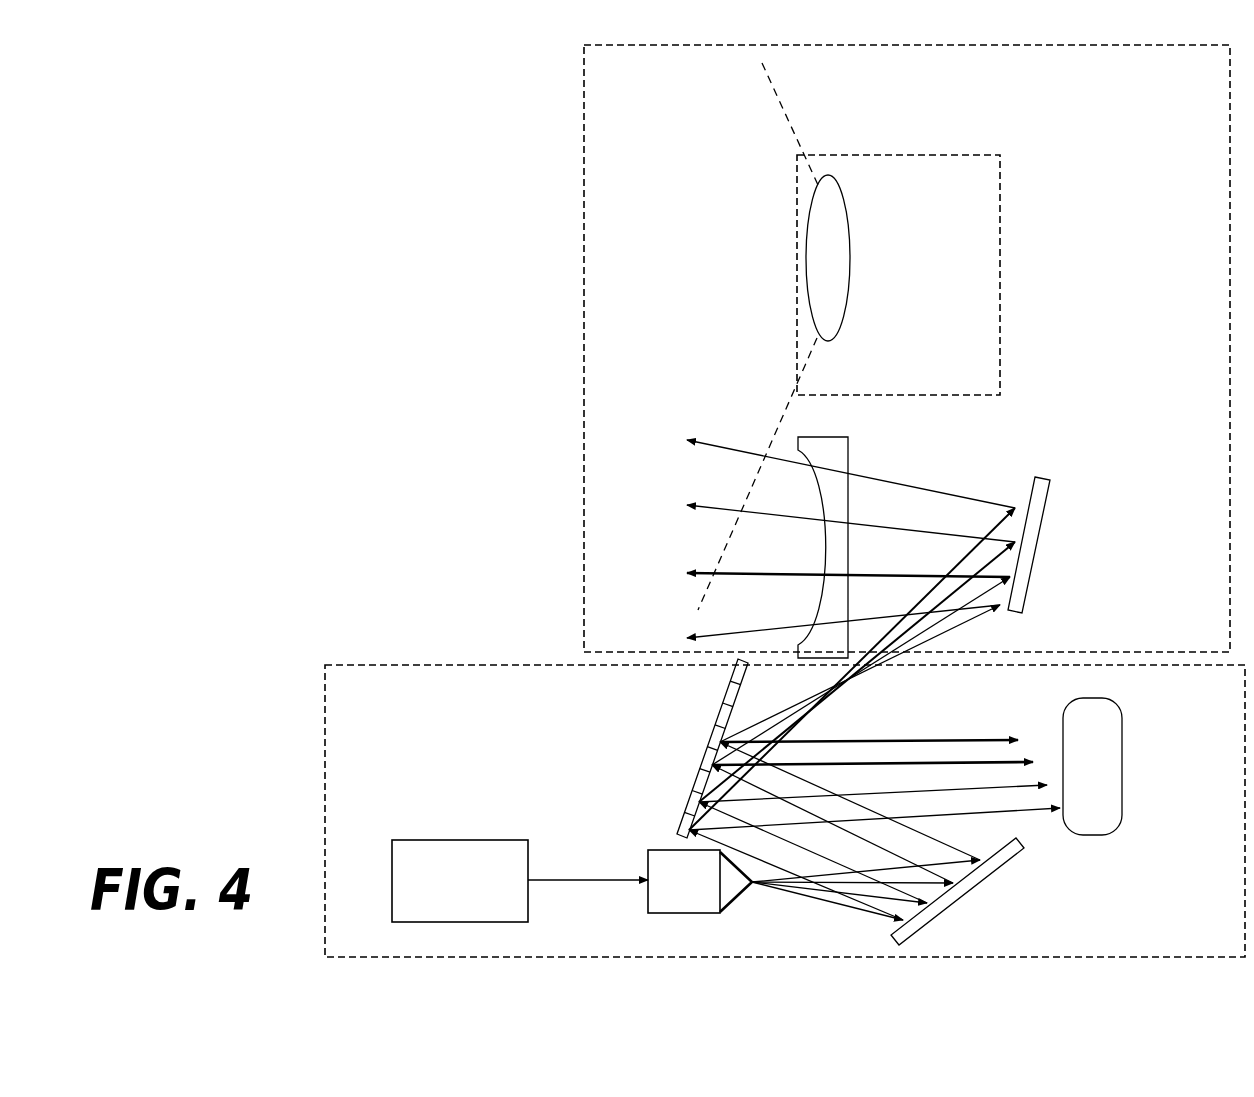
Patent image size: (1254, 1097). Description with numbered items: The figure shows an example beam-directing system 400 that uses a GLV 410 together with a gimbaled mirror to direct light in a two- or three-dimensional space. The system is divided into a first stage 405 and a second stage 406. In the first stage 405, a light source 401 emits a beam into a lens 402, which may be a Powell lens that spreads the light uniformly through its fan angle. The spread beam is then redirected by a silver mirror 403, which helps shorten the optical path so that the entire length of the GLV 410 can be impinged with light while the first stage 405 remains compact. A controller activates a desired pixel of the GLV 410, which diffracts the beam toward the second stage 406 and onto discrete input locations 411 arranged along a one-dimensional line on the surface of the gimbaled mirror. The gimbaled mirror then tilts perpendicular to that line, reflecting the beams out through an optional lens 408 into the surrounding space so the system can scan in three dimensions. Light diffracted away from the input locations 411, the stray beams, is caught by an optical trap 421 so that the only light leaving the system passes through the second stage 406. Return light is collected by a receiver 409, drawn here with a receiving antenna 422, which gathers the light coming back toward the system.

The beam-directing system 400 is at (377, 157).
The light source 401 is at (474, 912).
The lens 402 is at (699, 902).
The silver mirror 403 is at (984, 891).
The first stage 405 is at (443, 759).
The second stage 406 is at (1147, 154).
The lens 408 is at (850, 458).
The receiver 409 is at (918, 364).
The GLV 410 is at (670, 748).
The input locations 411 is at (1091, 545).
The optical trap 421 is at (1147, 766).
The receiving antenna 422 is at (842, 267).